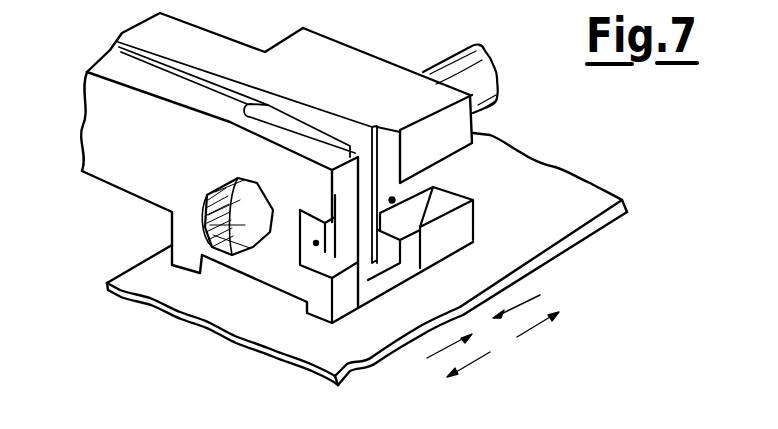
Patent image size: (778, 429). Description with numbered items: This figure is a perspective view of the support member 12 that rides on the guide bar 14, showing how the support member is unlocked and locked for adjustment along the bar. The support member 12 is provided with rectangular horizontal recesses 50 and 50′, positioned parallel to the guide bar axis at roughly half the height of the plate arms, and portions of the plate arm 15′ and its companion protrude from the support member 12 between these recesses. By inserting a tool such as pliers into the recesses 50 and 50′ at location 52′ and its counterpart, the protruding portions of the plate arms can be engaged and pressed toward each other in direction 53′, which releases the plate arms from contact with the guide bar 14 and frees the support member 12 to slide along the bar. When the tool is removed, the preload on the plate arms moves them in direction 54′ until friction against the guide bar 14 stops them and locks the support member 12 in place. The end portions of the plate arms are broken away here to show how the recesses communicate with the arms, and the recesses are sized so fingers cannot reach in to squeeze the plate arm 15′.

The support member 12 is at (100, 128).
The guide bar 14 is at (445, 60).
The plate arm 15′ is at (247, 133).
The rectangular horizontal recess 50 is at (330, 256).
The rectangular horizontal recess 50′ is at (432, 181).
The tool insertion location 52′ is at (317, 244).
The unlocking direction 53′ is at (520, 305).
The locking direction 54′ is at (536, 328).